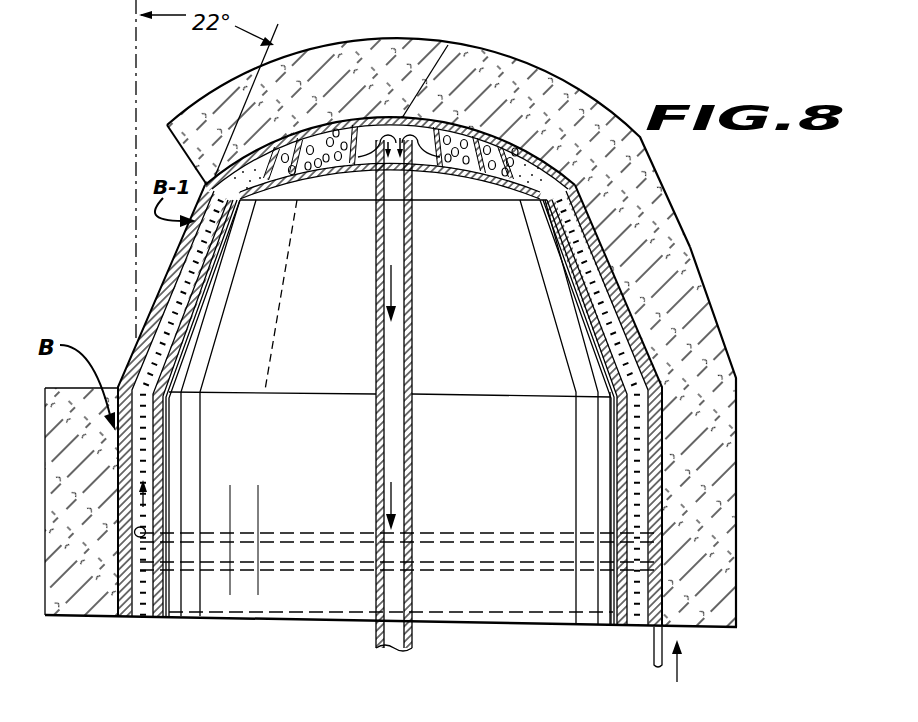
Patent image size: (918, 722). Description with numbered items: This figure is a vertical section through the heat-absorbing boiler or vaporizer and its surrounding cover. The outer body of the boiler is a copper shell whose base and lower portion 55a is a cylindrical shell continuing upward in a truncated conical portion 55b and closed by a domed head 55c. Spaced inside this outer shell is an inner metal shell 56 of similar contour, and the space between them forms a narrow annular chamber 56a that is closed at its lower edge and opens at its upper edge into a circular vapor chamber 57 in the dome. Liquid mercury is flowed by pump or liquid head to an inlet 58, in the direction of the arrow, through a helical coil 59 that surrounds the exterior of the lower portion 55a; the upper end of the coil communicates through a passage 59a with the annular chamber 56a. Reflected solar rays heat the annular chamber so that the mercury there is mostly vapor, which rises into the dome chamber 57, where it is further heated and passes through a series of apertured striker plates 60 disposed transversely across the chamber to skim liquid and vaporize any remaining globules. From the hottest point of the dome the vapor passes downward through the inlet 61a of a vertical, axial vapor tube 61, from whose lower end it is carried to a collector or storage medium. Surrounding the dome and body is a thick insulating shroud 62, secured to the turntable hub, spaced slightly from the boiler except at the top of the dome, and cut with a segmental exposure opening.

The base and lower portion of the boiler body 55a is at (636, 452).
The upper truncated conical portion 55b is at (168, 288).
The domed head 55c is at (603, 106).
The inner metal shell 56 is at (594, 338).
The annular chamber 56a is at (642, 372).
The circular vapor chamber 57 is at (548, 186).
The inlet 58 is at (654, 648).
The helical coil 59 is at (660, 540).
The passage 59a is at (152, 530).
The apertured striker plates 60 is at (497, 166).
The vertical and axial vapor tube 61 is at (376, 362).
The inlet of the vapor tube 61a is at (448, 45).
The insulating shroud 62 is at (518, 88).